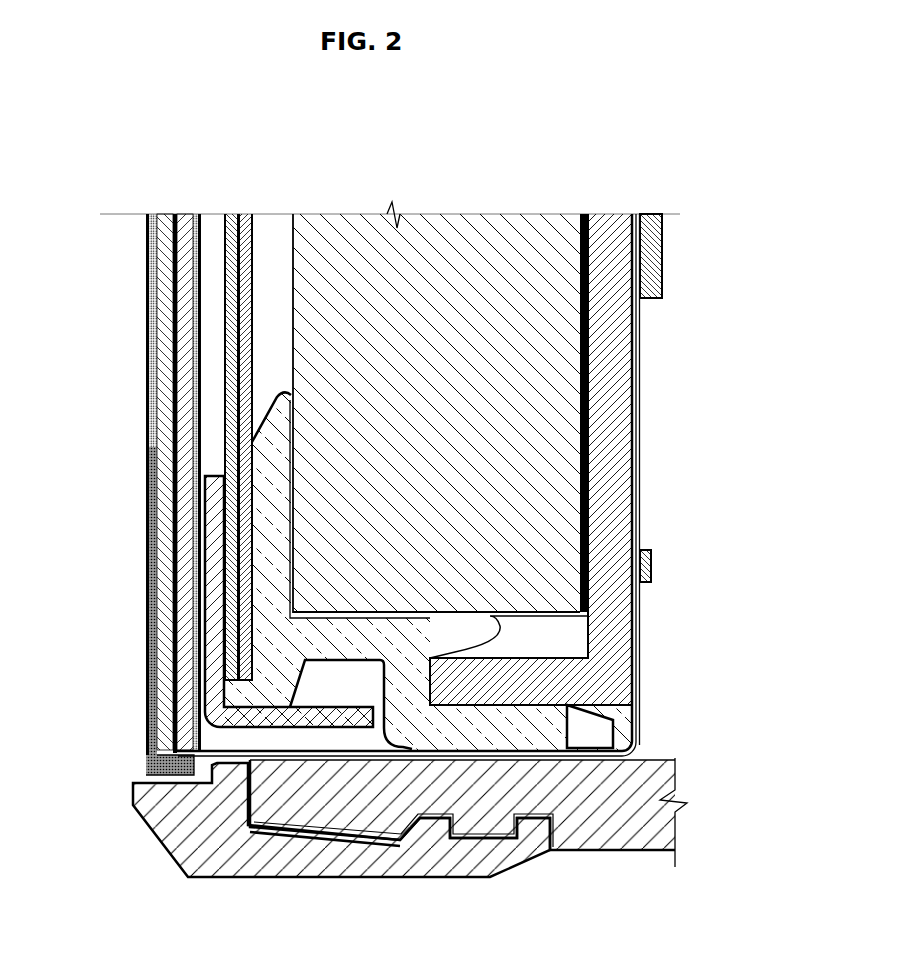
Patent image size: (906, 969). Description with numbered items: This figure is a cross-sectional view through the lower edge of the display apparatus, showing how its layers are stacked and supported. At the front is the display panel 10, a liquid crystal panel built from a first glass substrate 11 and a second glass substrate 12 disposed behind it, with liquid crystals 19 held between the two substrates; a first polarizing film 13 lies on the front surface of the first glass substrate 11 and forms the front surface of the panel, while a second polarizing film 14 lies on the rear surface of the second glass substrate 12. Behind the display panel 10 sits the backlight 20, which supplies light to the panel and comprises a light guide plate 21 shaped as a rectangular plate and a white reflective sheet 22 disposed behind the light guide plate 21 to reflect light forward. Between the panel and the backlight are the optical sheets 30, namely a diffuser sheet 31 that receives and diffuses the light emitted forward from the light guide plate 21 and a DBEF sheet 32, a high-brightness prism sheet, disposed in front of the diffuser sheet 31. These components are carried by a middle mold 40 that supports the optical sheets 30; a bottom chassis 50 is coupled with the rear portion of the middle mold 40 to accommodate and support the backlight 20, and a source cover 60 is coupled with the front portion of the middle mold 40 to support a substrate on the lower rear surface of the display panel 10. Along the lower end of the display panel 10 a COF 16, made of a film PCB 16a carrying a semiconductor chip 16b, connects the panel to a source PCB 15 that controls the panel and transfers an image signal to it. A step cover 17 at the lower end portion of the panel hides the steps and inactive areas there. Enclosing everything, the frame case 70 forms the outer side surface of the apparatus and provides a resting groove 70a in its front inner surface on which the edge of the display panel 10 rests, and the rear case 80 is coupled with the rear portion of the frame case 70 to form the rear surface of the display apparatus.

The display panel 10 is at (125, 474).
The first glass substrate 11 is at (160, 422).
The second glass substrate 12 is at (165, 500).
The first polarizing film 13 is at (148, 342).
The second polarizing film 14 is at (200, 550).
The source PCB 15 is at (662, 260).
The Chip On Film (COF) 16 is at (477, 485).
The film PCB 16a is at (638, 495).
The semiconductor chip 16b is at (652, 565).
The step cover 17 is at (150, 685).
The liquid crystals 19 is at (175, 214).
The backlight 20 is at (491, 379).
The light guide plate 21 is at (490, 214).
The white reflective sheet 22 is at (588, 432).
The optical sheets 30 is at (241, 397).
The diffuser sheet 31 is at (243, 214).
The DBEF sheet 32 is at (236, 214).
The middle mold 40 is at (343, 650).
The bottom chassis 50 is at (630, 388).
The source cover 60 is at (234, 601).
The frame case 70 is at (325, 848).
The resting groove 70a is at (178, 778).
The rear case 80 is at (612, 850).